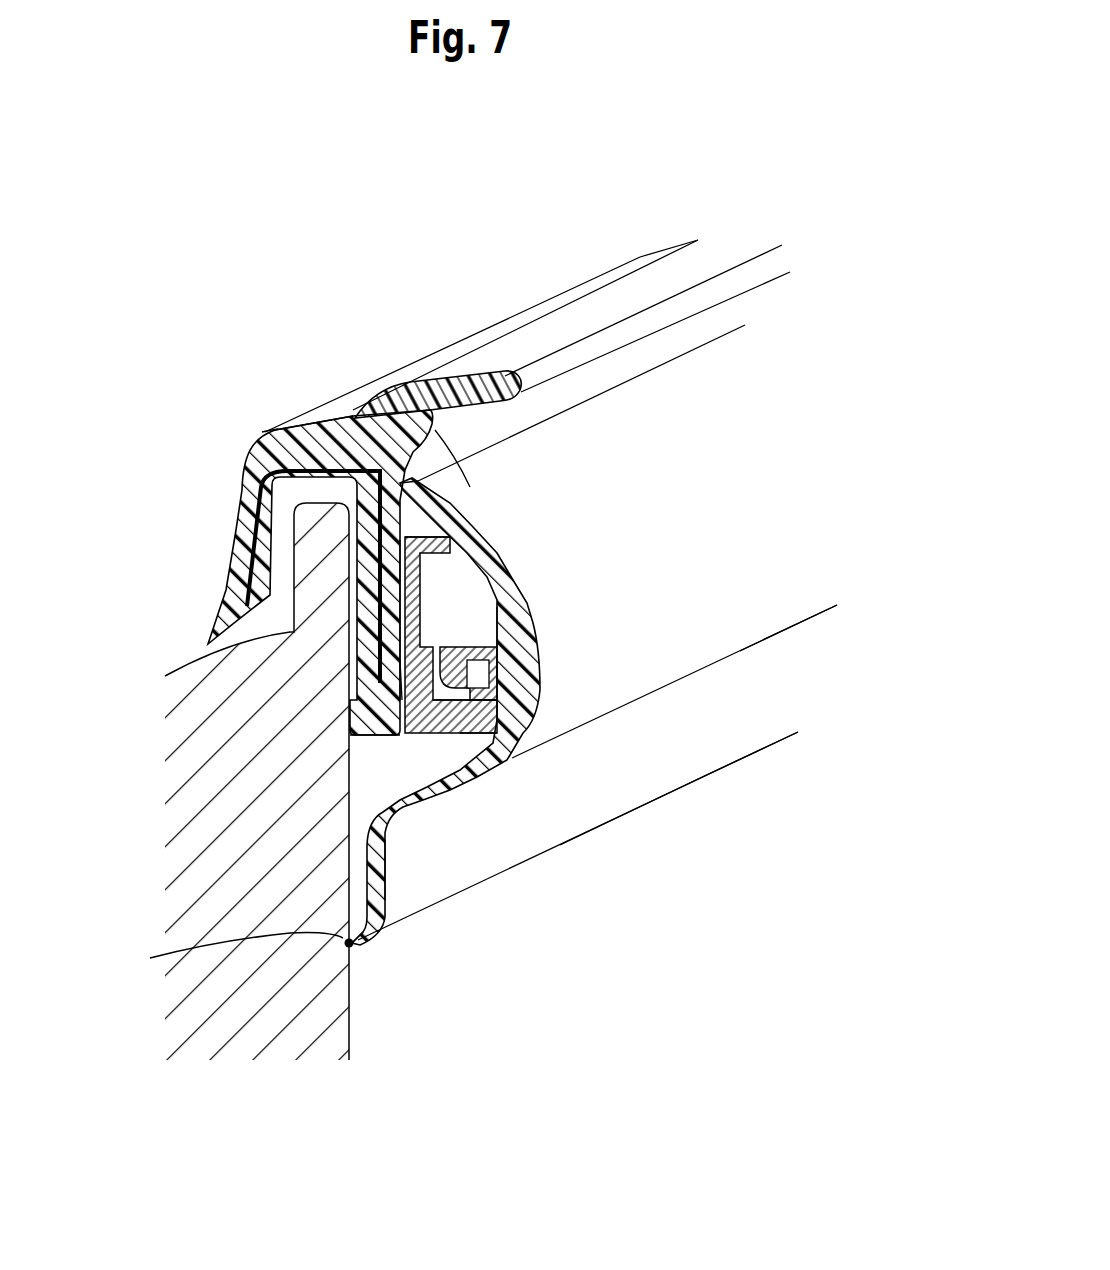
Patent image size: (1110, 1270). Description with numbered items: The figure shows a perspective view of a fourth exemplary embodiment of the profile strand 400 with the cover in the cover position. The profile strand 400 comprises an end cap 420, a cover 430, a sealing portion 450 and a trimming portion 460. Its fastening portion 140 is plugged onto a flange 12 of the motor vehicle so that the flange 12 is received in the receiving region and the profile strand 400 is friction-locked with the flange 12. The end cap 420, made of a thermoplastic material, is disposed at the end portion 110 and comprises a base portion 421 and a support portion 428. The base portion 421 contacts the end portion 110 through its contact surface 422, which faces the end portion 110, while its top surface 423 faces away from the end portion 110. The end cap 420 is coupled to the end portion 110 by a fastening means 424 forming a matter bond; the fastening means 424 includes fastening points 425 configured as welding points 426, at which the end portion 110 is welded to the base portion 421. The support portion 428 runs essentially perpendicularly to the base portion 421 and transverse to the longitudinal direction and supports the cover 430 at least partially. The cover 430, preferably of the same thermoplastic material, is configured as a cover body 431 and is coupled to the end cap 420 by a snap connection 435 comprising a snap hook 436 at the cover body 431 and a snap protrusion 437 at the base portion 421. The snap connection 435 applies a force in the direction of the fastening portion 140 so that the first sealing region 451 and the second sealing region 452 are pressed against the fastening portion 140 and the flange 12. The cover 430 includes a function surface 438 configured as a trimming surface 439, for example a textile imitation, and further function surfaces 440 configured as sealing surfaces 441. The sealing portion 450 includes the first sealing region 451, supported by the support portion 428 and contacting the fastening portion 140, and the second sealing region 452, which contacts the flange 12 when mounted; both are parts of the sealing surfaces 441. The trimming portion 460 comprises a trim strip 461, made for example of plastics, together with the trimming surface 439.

The flange 12 is at (247, 1012).
The end portion 110 is at (220, 538).
The fastening portion 140 is at (252, 423).
The profile strand 400 is at (598, 188).
The trimming portion 460 is at (538, 343).
The trim strip 461 is at (452, 380).
The function surfaces 440 is at (403, 480).
The sealing surfaces 441 is at (217, 953).
The first sealing region 451 is at (626, 386).
The support portion 428 is at (432, 490).
The end cap 420 is at (426, 588).
The base portion 421 is at (418, 572).
The contact surface 422 is at (396, 582).
The top surface 423 is at (485, 620).
The fastening means 424 is at (410, 685).
The fastening points 425 is at (408, 656).
The welding points 426 is at (243, 703).
The cover 430 is at (570, 847).
The cover body 431 is at (454, 876).
The snap connection 435 is at (481, 735).
The snap hook 436 is at (490, 658).
The snap protrusion 437 is at (478, 733).
The function surface 438 is at (717, 735).
The trimming surface 439 is at (772, 680).
The sealing portion 450 is at (632, 770).
The second sealing region 452 is at (358, 950).